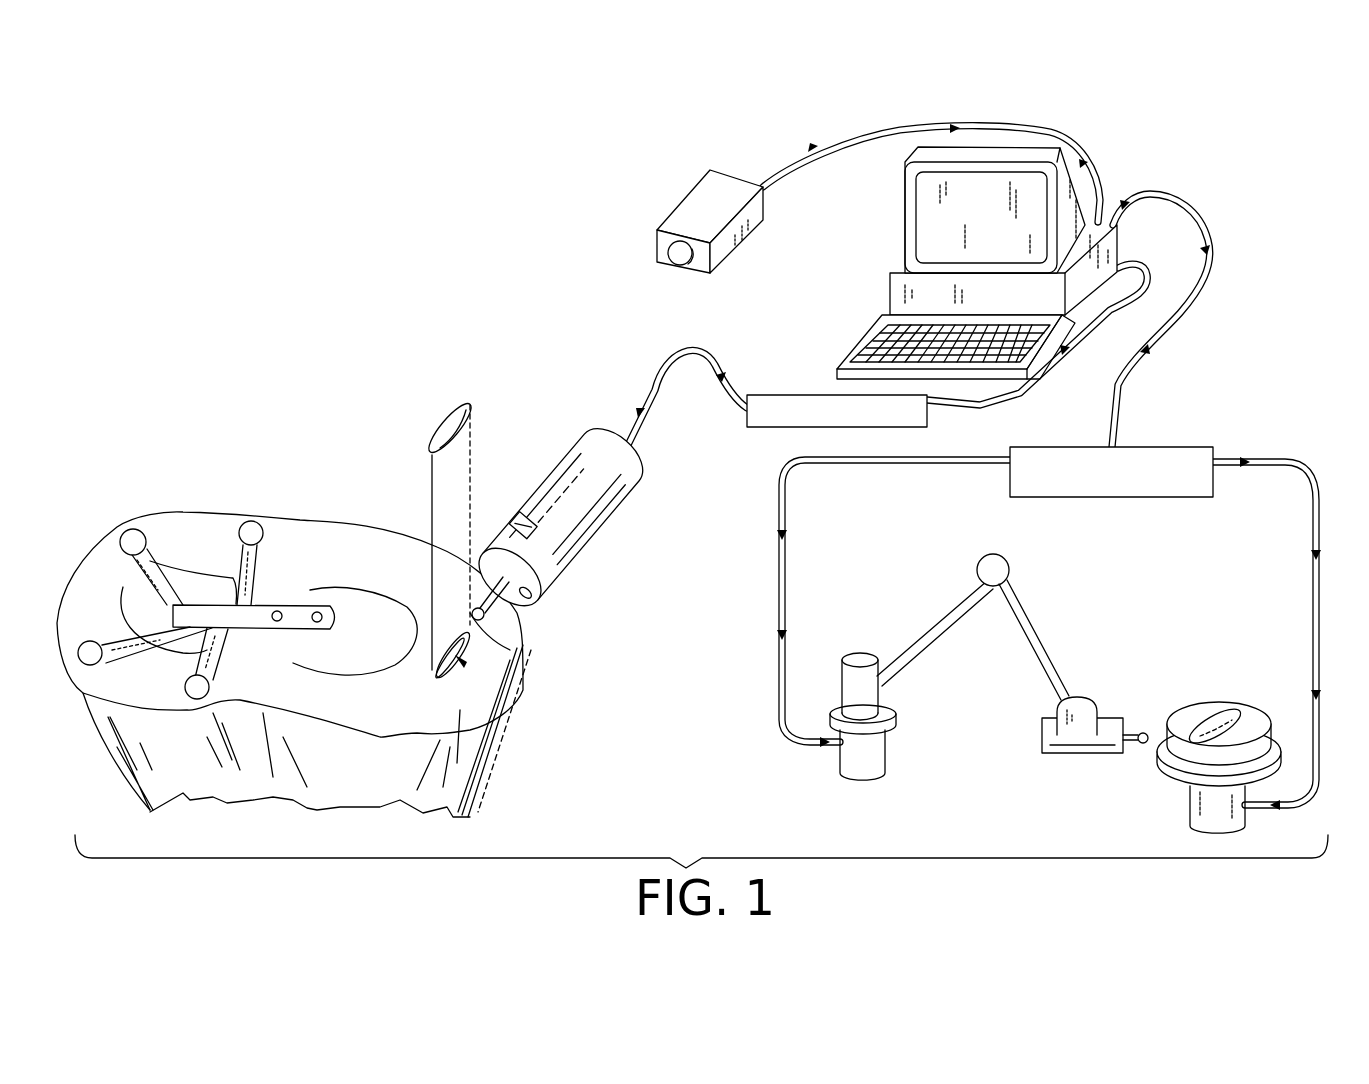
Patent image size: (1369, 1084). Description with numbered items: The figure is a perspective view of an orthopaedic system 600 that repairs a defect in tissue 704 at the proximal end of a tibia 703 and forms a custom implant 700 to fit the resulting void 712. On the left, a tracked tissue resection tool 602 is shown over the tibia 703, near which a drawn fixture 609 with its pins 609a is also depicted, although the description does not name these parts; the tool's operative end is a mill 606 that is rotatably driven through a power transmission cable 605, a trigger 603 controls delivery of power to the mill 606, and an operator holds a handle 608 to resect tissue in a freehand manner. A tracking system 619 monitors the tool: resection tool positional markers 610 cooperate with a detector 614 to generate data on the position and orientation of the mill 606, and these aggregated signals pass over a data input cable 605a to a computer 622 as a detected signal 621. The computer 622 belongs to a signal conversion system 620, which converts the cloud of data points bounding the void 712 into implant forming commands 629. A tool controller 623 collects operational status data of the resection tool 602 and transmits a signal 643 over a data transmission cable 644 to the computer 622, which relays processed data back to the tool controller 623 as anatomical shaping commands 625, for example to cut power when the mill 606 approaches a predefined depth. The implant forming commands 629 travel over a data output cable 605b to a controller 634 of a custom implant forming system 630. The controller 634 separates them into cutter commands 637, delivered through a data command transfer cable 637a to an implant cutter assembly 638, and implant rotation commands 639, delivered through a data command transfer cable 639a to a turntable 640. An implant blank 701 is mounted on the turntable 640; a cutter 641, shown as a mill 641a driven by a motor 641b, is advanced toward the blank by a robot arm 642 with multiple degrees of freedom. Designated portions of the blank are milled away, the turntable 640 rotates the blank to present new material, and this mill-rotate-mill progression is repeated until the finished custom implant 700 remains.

The orthopaedic system 600 is at (388, 196).
The tracked tissue resection tool 602 is at (560, 531).
The trigger 603 is at (518, 512).
The power transmission cable 605 is at (645, 422).
The data input cable 605a is at (826, 140).
The data output cable 605b is at (1150, 193).
The mill 606 is at (484, 617).
The handle 608 is at (615, 502).
The cutting guide implant 609 is at (219, 639).
The fixation pins 609a is at (135, 529).
The resection tool positional markers 610 is at (529, 604).
The detector 614 is at (702, 200).
The tracking system 619 is at (540, 298).
The signal conversion system 620 is at (1259, 185).
The detected signal 621 is at (998, 130).
The computer 622 is at (884, 236).
The tool controller 623 is at (785, 427).
The anatomical shaping commands 625 is at (1043, 397).
The implant forming commands 629 is at (1210, 278).
The custom implant forming system 630 is at (1339, 560).
The controller 634 is at (1167, 447).
The cutter commands 637 is at (774, 560).
The data command transfer cable 637a is at (818, 550).
The implant cutter assembly 638 is at (1006, 643).
The implant rotation commands 639 is at (1288, 457).
The data command transfer cable 639a is at (1312, 543).
The turntable 640 is at (1193, 749).
The cutter 641 is at (1079, 713).
The mill 641a is at (1143, 732).
The motor 641b is at (1075, 750).
The robot arm 642 is at (953, 613).
The signal 643 is at (668, 348).
The data transmission cable 644 is at (967, 417).
The custom implant 700 is at (1215, 702).
The implant blank 701 is at (1257, 723).
The tibia 703 is at (190, 488).
The tissue 704 is at (466, 692).
The void 712 is at (470, 662).